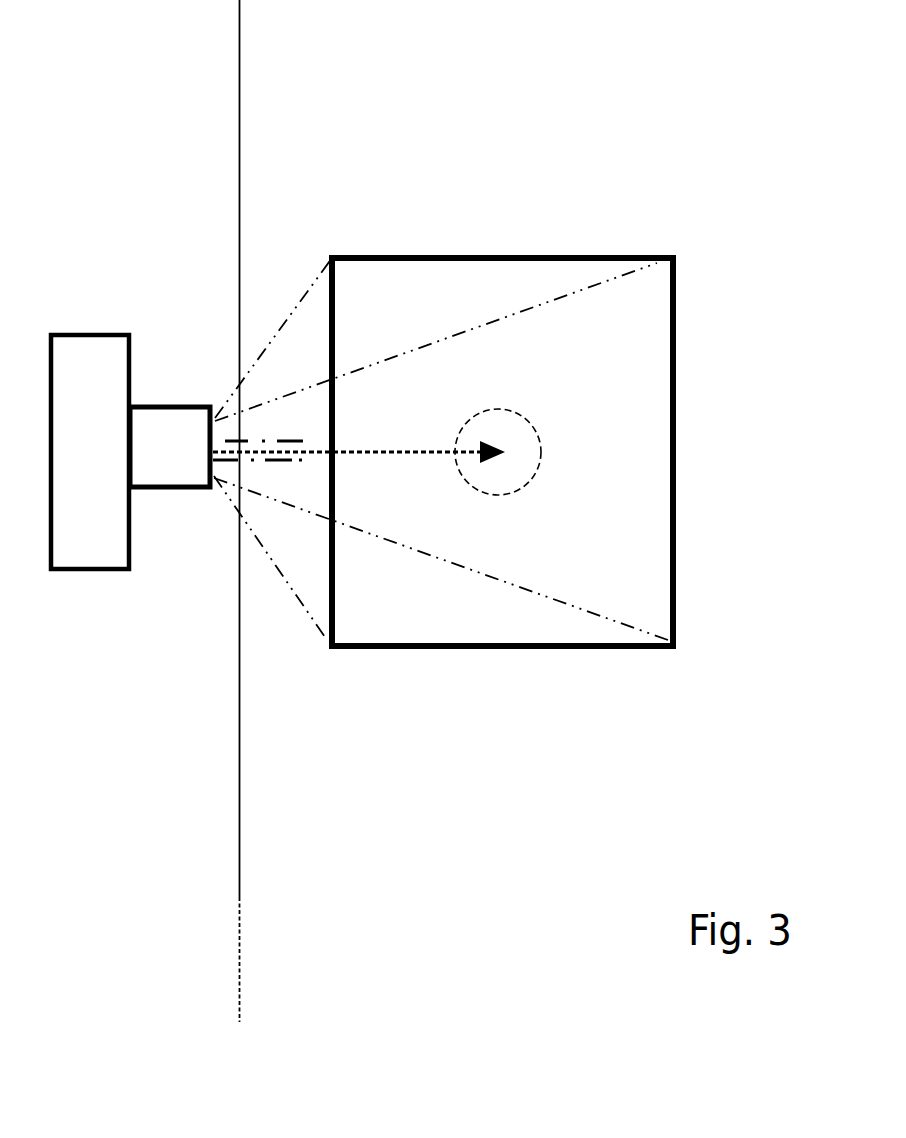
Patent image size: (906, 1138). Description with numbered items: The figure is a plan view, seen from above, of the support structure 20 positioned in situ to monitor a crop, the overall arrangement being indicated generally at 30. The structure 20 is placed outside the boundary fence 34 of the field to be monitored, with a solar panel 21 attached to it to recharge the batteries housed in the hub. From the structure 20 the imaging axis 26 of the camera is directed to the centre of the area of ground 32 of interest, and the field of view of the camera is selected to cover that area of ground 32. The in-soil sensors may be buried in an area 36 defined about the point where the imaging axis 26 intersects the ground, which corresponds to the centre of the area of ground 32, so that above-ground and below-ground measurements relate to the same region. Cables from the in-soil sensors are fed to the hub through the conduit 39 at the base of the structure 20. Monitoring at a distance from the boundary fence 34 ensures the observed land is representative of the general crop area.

The projection arrangement 30 is at (63, 194).
The boundary fence 34 is at (240, 172).
The solar panel 21 is at (98, 540).
The structure 20 is at (185, 422).
The conduit 39 is at (230, 440).
The area of ground 32 is at (474, 256).
The imaging axis 26 is at (408, 448).
The area 36 is at (532, 423).